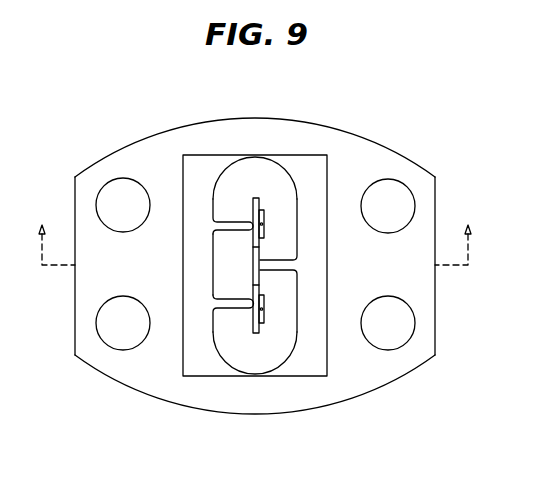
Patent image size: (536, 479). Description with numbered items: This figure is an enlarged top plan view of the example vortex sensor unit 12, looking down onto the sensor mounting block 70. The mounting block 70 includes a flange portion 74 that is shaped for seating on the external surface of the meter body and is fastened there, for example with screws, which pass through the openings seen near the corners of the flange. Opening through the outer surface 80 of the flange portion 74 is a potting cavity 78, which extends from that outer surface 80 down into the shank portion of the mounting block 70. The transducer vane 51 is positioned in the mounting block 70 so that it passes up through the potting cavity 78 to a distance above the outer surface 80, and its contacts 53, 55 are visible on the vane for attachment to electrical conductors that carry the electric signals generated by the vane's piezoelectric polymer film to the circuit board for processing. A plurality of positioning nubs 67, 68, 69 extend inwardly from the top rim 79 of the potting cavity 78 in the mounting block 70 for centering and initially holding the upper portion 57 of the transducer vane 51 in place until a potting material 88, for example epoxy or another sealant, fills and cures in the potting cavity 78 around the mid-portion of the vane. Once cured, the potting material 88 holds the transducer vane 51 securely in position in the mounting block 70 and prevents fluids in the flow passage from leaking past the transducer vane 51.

The vortex sensor unit 12 is at (175, 88).
The transducer vane 51 is at (272, 282).
The contact 53 is at (264, 315).
The contact 55 is at (263, 220).
The upper portion of the transducer vane 57 is at (253, 257).
The positioning nub 67 is at (232, 222).
The positioning nub 68 is at (283, 260).
The positioning nub 69 is at (235, 309).
The sensor mounting block 70 is at (120, 138).
The flange portion 74 is at (405, 152).
The potting cavity 78 is at (268, 163).
The top rim of the potting cavity 79 is at (214, 262).
The outer surface of the flange portion 80 is at (291, 158).
The potting material 88 is at (245, 365).